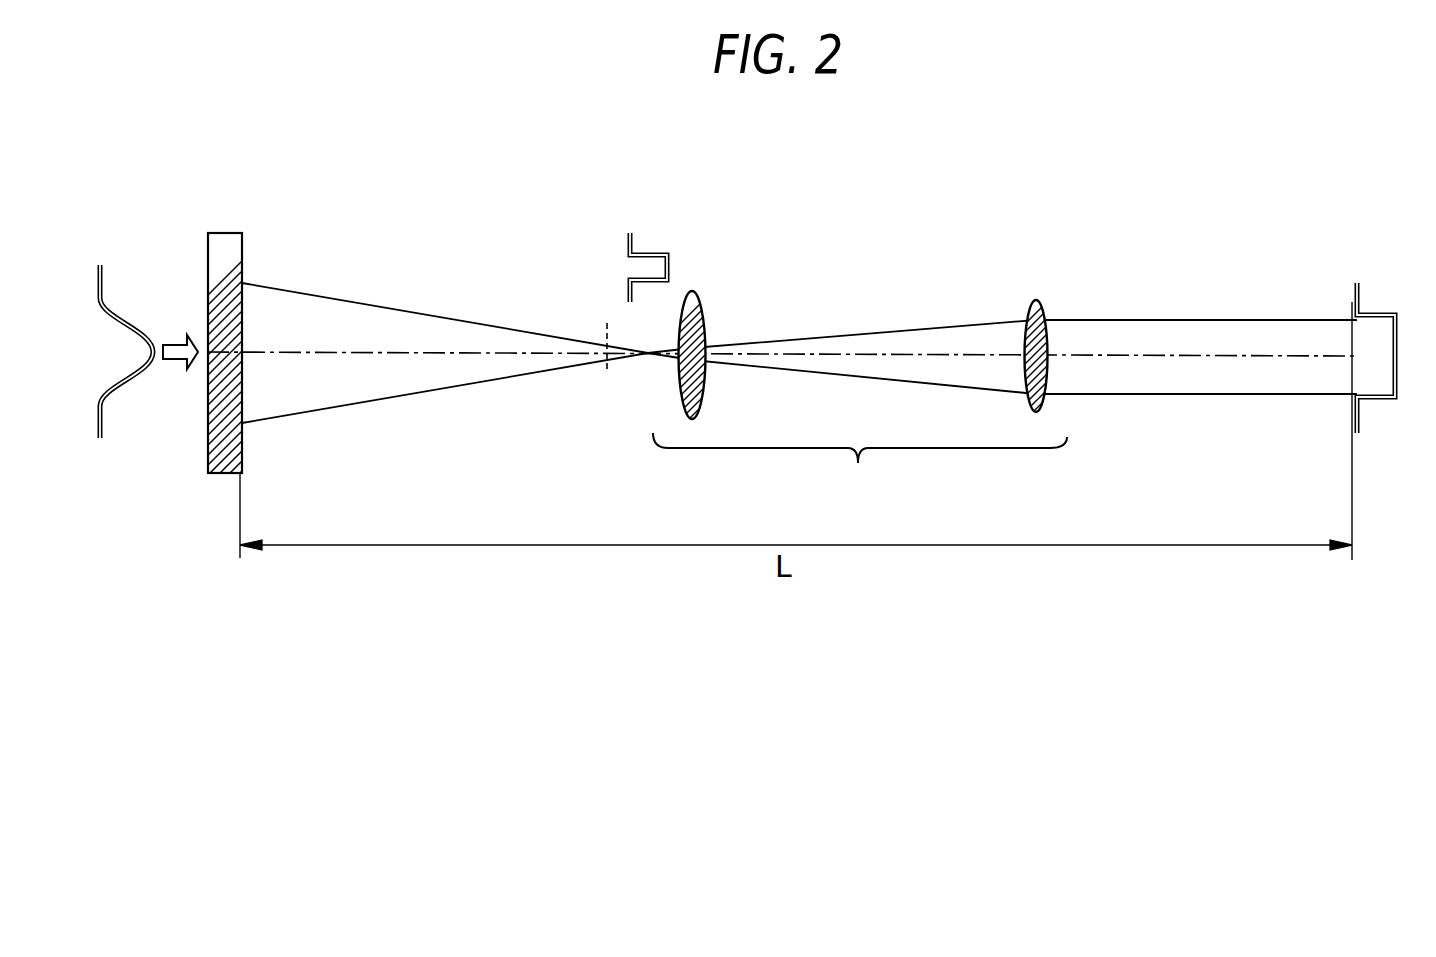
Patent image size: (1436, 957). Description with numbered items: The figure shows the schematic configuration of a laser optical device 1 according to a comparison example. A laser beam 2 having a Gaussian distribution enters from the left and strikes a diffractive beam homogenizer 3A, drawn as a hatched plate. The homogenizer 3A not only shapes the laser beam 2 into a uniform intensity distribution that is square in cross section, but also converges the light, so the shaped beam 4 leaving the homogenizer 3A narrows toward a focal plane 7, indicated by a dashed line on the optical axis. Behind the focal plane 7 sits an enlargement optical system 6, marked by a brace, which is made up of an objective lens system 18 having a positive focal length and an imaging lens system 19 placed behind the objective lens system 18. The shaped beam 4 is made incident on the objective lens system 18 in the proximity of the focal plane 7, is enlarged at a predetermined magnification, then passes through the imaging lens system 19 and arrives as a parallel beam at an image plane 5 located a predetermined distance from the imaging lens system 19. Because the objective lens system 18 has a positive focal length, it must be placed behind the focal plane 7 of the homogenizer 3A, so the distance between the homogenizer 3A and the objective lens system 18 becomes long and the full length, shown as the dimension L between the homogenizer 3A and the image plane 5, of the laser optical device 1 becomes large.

The laser optical device 1 is at (933, 196).
The laser beam 2 is at (127, 317).
The diffractive beam homogenizer 3A is at (225, 232).
The shaped beam 4 is at (382, 305).
The image plane 5 is at (1352, 467).
The enlargement optical system 6 is at (860, 465).
The focal plane 7 is at (607, 370).
The objective lens system 18 is at (693, 292).
The imaging lens system 19 is at (1035, 298).